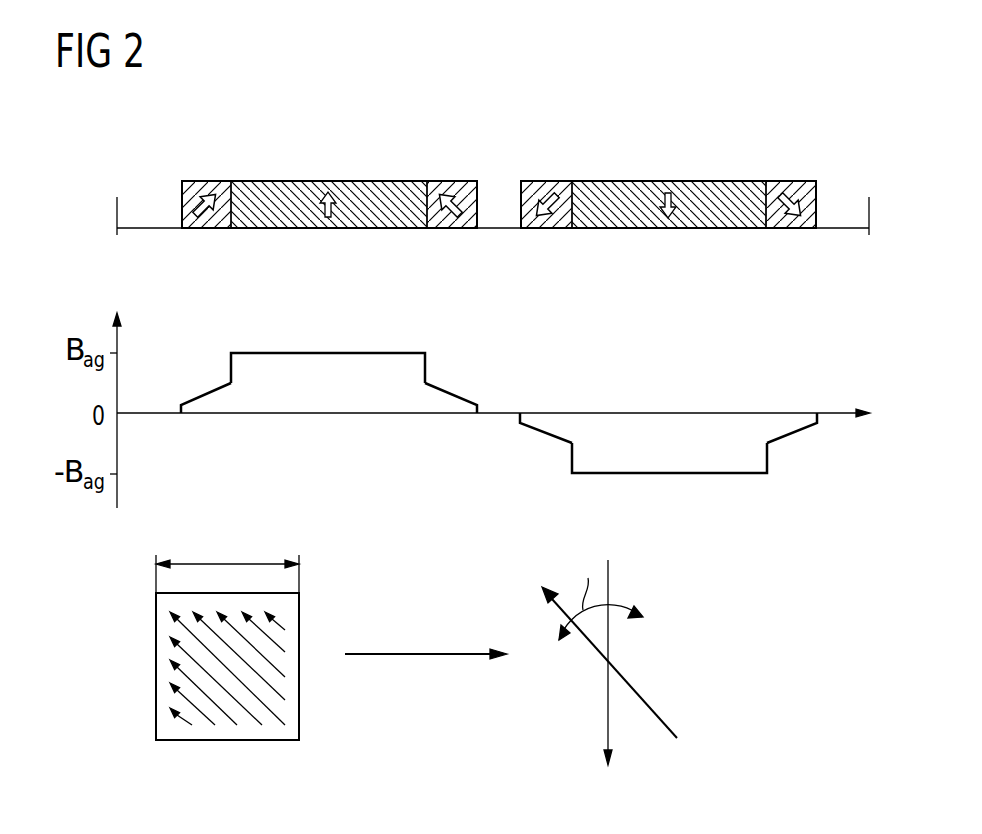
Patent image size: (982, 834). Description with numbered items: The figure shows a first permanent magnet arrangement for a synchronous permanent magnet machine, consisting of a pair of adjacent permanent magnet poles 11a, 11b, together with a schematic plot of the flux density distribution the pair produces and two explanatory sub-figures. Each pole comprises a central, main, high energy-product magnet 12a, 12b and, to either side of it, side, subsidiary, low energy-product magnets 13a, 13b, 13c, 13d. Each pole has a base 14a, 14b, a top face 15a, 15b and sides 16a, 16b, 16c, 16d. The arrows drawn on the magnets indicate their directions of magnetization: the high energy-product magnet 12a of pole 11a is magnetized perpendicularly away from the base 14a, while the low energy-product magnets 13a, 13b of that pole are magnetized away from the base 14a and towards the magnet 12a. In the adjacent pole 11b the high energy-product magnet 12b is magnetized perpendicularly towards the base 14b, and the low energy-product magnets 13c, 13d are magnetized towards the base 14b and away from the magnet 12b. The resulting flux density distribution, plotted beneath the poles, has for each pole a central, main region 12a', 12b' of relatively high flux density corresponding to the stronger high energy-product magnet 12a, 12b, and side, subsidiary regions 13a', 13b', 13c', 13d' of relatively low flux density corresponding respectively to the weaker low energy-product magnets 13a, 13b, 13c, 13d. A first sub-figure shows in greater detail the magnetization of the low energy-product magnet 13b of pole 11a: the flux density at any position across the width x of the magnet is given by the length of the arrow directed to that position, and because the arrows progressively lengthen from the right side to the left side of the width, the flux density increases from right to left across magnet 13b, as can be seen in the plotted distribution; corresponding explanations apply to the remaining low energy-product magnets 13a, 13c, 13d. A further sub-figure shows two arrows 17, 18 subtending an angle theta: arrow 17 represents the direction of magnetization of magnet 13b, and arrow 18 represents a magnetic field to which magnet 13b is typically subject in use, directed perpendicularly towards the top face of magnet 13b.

The permanent magnet pole 11a is at (328, 110).
The permanent magnet pole 11b is at (668, 110).
The high energy-product magnet 12a is at (329, 182).
The high energy-product magnet 12b is at (669, 182).
The low energy-product magnet 13a is at (213, 179).
The low energy-product magnet 13b is at (316, 465).
The low energy-product magnet 13c is at (552, 179).
The low energy-product magnet 13d is at (789, 178).
The base 14a is at (360, 230).
The base 14b is at (702, 230).
The top face 15a is at (285, 182).
The top face 15b is at (627, 182).
The side 16a is at (181, 205).
The side 16b is at (478, 217).
The side 16c is at (520, 192).
The side 16d is at (817, 192).
The arrow 17 is at (640, 695).
The arrow 18 is at (607, 703).
The central main region 12a' is at (328, 344).
The central main region 12b' is at (669, 489).
The side subsidiary region 13a' is at (205, 379).
The side subsidiary region 13b' is at (451, 379).
The side subsidiary region 13c' is at (546, 402).
The side subsidiary region 13d' is at (793, 402).